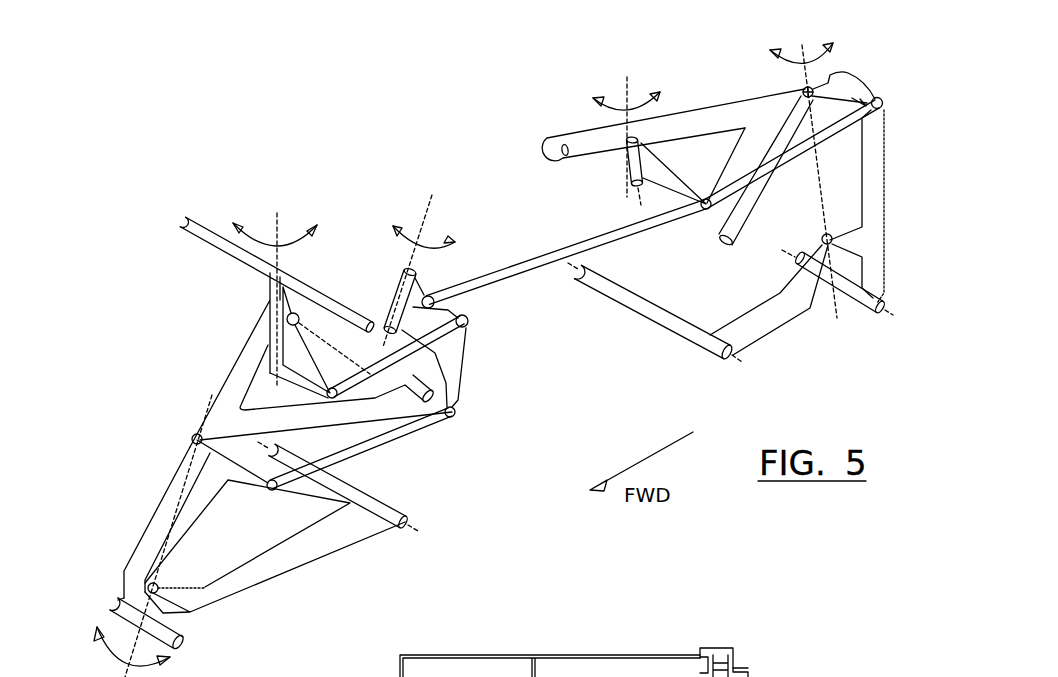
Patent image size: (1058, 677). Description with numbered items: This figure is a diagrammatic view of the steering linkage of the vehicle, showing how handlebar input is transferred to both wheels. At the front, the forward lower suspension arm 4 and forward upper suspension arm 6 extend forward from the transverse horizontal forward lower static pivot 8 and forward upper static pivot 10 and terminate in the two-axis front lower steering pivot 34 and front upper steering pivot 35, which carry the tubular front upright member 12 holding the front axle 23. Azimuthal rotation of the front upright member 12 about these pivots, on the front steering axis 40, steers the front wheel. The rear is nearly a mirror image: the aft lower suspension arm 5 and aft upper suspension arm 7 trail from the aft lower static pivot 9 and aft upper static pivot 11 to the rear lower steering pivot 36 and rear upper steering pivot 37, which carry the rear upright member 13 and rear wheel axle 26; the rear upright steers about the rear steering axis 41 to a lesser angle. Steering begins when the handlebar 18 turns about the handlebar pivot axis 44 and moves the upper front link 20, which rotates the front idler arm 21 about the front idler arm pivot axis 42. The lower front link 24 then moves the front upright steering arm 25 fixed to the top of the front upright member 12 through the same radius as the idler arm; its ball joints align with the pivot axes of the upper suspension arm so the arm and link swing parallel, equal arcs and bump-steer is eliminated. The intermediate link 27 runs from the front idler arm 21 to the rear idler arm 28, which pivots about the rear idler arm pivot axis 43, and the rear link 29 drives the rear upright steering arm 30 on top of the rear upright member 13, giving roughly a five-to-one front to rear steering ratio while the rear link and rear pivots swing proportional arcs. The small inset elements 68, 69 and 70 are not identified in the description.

The forward lower suspension arm 4 is at (325, 562).
The aft lower suspension arm 5 is at (785, 330).
The forward upper suspension arm 6 is at (250, 343).
The aft upper suspension arm 7 is at (722, 104).
The forward lower static pivot 8 is at (410, 528).
The aft lower static pivot 9 is at (729, 363).
The forward upper static pivot 10 is at (288, 316).
The aft upper static pivot 11 is at (615, 175).
The front upright member 12 is at (147, 543).
The rear upright member 13 is at (885, 140).
The handlebar 18 is at (207, 243).
The upper front link 20 is at (357, 373).
The front idler arm 21 is at (450, 365).
The front axle 23 is at (188, 646).
The lower front link 24 is at (395, 443).
The front upright steering arm 25 is at (229, 482).
The rear wheel axle 26 is at (885, 313).
The intermediate link 27 is at (527, 262).
The rear idler arm 28 is at (662, 195).
The rear link 29 is at (799, 158).
The rear upright steering arm 30 is at (879, 97).
The front lower steering pivot 34 is at (150, 584).
The front upper steering pivot 35 is at (193, 440).
The rear lower steering pivot 36 is at (822, 239).
The rear upper steering pivot 37 is at (800, 91).
The front steering axis 40 is at (183, 482).
The rear steering axis 41 is at (827, 78).
The front idler arm pivot axis 42 is at (426, 208).
The rear idler arm pivot axis 43 is at (624, 98).
The handlebar pivot axis 44 is at (274, 222).
The panel 68 is at (792, 666).
The hinge bracket 69 is at (724, 648).
The panel 70 is at (473, 655).